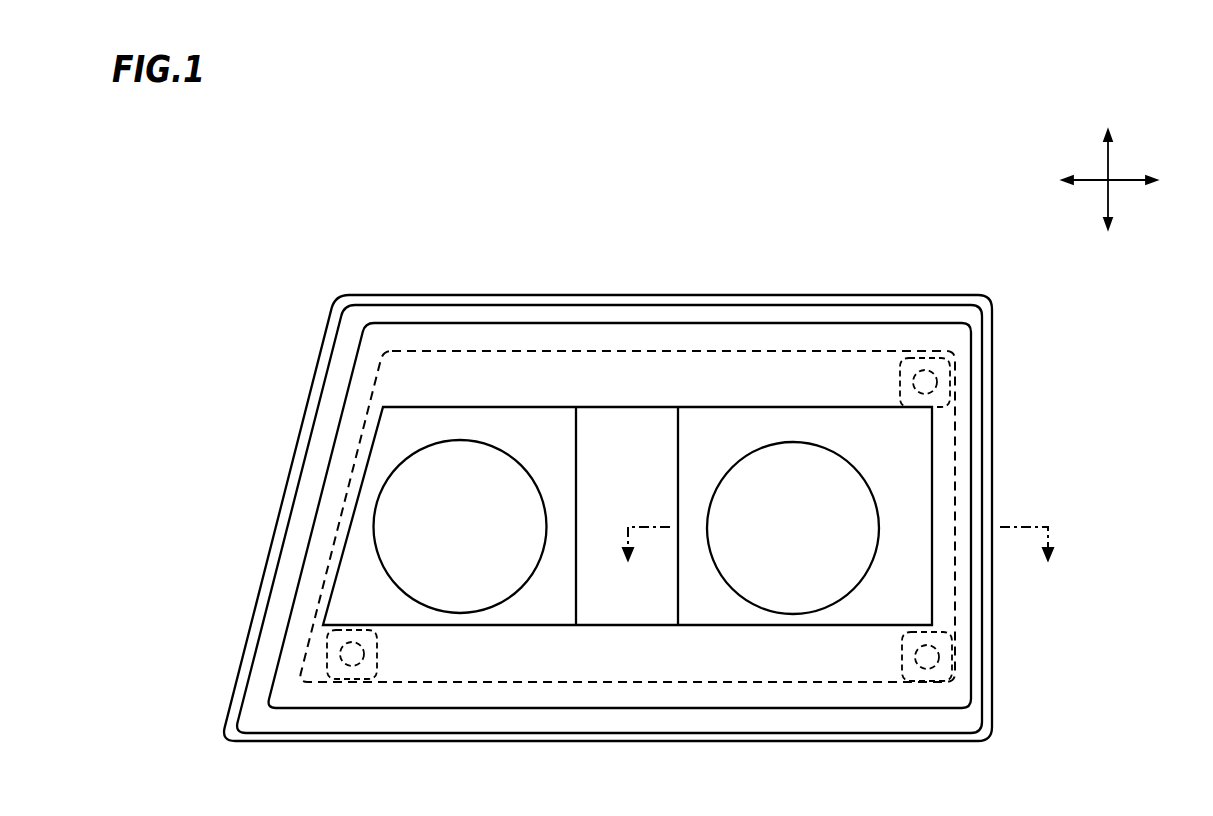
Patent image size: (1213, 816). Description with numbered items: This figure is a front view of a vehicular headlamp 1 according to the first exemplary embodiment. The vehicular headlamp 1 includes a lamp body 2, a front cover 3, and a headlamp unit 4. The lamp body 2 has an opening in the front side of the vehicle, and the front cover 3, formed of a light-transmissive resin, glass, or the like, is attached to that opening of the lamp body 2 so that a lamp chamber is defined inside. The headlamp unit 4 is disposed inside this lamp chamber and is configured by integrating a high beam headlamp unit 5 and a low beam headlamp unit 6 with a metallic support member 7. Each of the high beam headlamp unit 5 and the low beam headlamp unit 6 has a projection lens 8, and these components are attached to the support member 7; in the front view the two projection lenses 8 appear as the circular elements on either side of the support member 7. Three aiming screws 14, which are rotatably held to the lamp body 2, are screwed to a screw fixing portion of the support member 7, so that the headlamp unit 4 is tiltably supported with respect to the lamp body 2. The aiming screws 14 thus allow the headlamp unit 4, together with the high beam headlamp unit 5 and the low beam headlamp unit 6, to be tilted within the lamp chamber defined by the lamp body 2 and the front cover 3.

The vehicular headlamp 1 is at (465, 165).
The lamp body 2 is at (988, 352).
The front cover 3 is at (977, 410).
The headlamp unit 4 is at (550, 236).
The high beam headlamp unit 5 is at (712, 470).
The low beam headlamp unit 6 is at (513, 443).
The support member 7 is at (613, 480).
The projection lens 8 is at (860, 468).
The aiming screws 14 is at (925, 372).